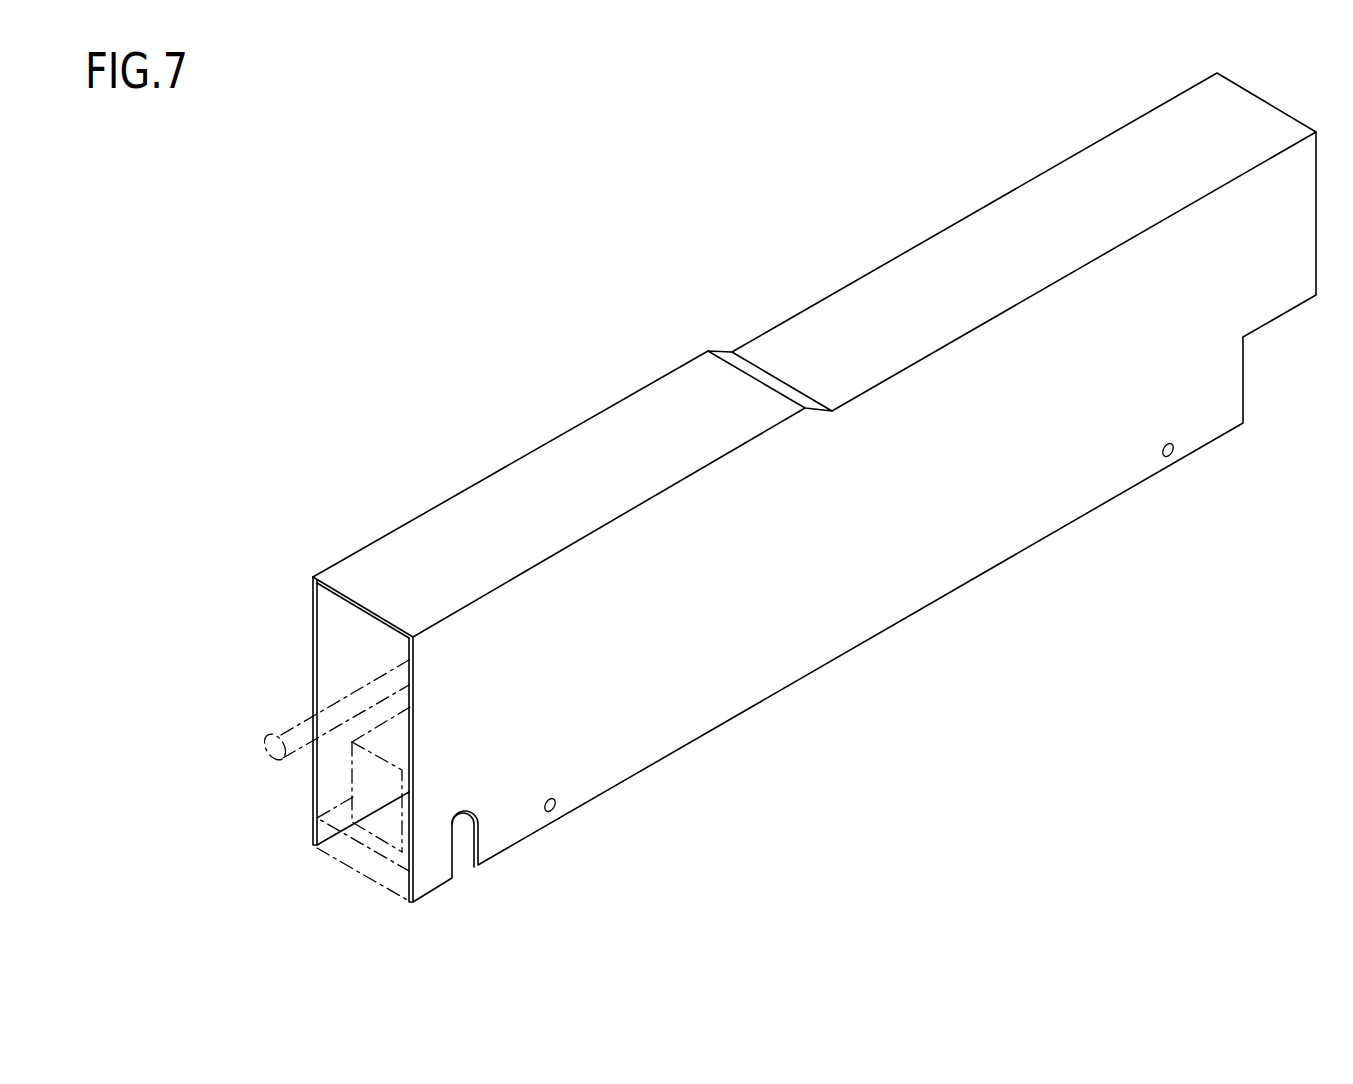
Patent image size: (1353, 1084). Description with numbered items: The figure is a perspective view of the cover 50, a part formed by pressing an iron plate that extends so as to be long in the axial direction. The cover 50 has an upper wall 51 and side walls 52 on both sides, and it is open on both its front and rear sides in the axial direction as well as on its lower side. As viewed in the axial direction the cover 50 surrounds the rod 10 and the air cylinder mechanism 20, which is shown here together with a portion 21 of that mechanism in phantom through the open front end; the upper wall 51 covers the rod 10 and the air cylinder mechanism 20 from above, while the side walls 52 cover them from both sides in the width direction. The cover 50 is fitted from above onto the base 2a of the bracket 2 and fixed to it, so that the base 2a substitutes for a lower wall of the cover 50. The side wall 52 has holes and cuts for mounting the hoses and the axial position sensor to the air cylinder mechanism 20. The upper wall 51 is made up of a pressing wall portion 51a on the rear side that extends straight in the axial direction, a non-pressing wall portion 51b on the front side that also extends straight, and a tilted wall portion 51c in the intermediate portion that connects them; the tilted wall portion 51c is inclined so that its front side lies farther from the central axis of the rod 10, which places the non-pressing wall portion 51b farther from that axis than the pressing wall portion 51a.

The cover 50 is at (712, 205).
The upper wall 51 is at (892, 290).
The pressing wall portion 51a is at (973, 230).
The non-pressing wall portion 51b is at (560, 455).
The tilted wall portion 51c is at (760, 368).
The side wall 52 is at (962, 518).
The rod 10 is at (291, 733).
The block 21 is at (367, 775).
The air cylinder mechanism 20 is at (297, 779).
The base 2a is at (362, 855).
The bracket 2 is at (363, 877).